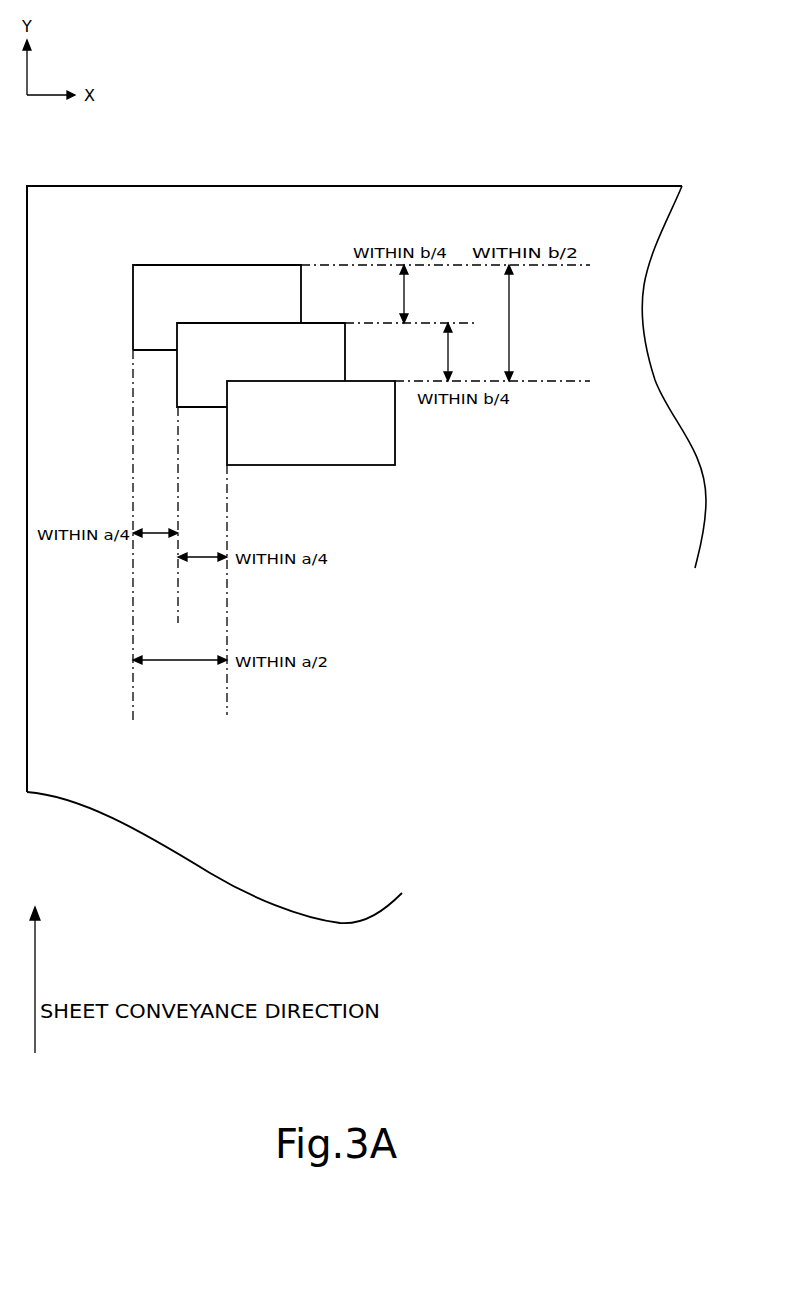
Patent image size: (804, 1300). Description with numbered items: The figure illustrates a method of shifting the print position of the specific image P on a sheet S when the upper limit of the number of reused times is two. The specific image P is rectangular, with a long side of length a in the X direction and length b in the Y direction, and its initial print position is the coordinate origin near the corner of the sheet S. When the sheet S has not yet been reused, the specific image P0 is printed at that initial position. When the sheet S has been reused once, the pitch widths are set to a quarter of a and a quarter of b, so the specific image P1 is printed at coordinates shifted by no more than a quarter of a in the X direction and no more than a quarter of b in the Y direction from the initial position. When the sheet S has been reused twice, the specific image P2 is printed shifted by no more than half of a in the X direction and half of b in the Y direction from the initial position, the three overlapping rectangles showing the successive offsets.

The specific image P is at (247, 329).
The specific image P(0) P0 is at (217, 307).
The specific image P(1) P1 is at (261, 365).
The specific image P(2) P2 is at (311, 423).
The sheet S is at (634, 338).